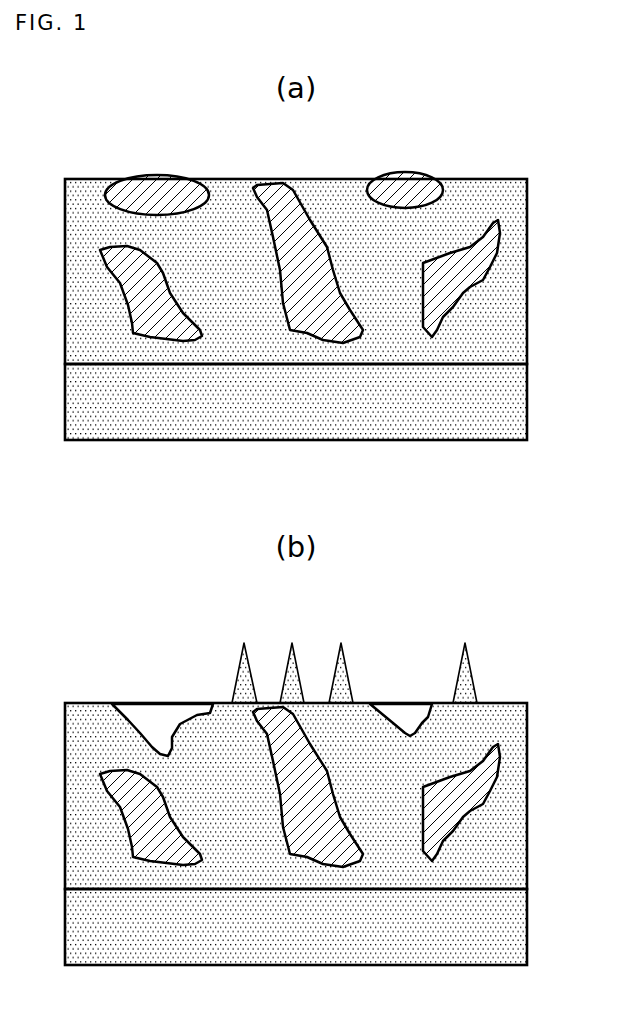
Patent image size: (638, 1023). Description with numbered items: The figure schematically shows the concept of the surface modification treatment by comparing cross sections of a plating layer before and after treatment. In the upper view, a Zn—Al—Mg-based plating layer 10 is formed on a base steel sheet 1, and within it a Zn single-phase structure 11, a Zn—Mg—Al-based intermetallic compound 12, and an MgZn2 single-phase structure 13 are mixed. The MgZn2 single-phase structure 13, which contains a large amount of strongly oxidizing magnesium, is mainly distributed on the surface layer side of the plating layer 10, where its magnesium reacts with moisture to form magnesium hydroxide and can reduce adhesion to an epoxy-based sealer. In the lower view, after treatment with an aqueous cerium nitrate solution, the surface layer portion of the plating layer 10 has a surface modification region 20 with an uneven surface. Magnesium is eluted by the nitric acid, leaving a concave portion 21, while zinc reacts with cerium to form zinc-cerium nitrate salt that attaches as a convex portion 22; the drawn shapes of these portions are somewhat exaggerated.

The base steel sheet 1 is at (60, 365).
The Zn—Al—Mg-based plating layer 10 is at (60, 180).
The Zn single-phase structure 11 is at (517, 326).
The Zn—Mg—Al-based intermetallic compound 12 is at (165, 333).
The MgZn2 single-phase structure 13 is at (155, 185).
The surface modification region 20 is at (533, 647).
The concave portion 21 is at (158, 719).
The convex portion 22 is at (238, 673).